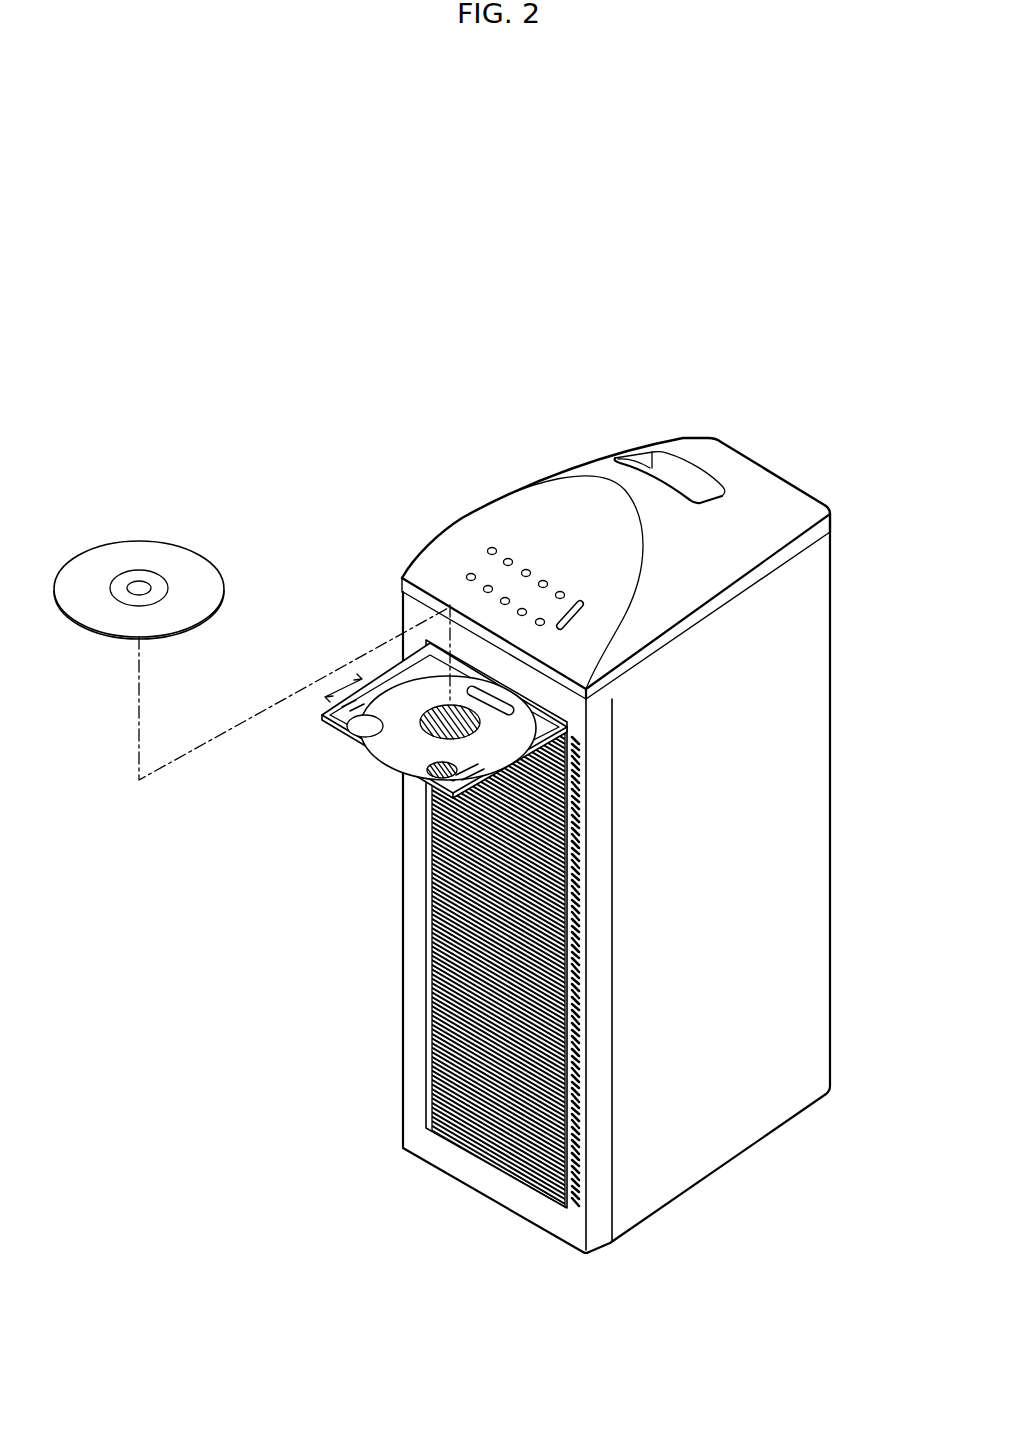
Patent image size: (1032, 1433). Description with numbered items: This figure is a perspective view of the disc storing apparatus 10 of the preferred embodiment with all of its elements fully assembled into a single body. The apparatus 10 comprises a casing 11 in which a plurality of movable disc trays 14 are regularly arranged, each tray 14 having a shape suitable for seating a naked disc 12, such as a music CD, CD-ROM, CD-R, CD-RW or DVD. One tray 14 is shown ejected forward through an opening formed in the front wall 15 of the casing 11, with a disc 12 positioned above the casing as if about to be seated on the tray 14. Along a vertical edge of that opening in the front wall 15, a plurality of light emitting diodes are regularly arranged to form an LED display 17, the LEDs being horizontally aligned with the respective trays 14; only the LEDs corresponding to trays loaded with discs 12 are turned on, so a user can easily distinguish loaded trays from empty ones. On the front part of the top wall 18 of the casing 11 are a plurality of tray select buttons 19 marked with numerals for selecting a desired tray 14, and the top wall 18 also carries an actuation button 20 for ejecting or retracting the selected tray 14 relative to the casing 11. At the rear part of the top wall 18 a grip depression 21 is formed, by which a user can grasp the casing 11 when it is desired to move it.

The disc storing apparatus 10 is at (536, 834).
The casing 11 is at (818, 663).
The naked disc 12 is at (142, 550).
The disc tray 14 is at (368, 753).
The front wall 15 is at (415, 958).
The LED display 17 is at (573, 1202).
The top wall 18 is at (588, 463).
The tray select buttons 19 is at (489, 548).
The actuation button 20 is at (577, 600).
The grip depression 21 is at (640, 458).